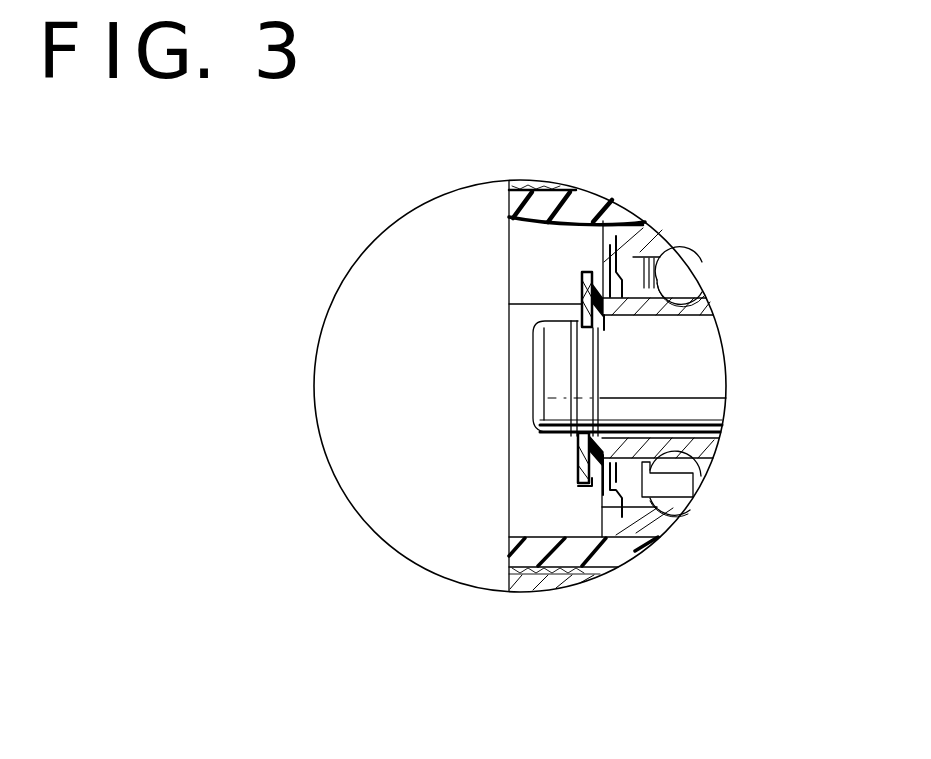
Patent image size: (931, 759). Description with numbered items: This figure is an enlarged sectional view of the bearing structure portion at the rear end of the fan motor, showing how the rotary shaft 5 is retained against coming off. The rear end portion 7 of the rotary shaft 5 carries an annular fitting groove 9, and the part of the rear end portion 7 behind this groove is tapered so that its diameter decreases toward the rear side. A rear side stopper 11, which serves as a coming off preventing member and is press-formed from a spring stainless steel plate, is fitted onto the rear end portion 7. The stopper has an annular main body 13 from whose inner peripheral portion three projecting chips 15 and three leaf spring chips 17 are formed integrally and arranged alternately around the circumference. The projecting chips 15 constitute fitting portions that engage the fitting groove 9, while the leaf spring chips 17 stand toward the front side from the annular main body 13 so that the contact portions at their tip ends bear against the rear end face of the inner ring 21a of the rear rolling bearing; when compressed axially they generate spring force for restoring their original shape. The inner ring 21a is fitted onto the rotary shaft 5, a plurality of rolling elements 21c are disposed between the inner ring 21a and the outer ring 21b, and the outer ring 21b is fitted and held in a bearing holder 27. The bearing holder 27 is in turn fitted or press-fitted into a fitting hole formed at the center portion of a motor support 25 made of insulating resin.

The rotary shaft 5 is at (690, 364).
The rear end portion 7 is at (544, 321).
The fitting groove 9 is at (577, 398).
The rear side stopper 11 is at (566, 281).
The annular main body 13 is at (596, 494).
The projecting chips 15 is at (580, 304).
The leaf spring chips 17 is at (606, 262).
The inner ring 21a is at (699, 312).
The outer ring 21b is at (644, 229).
The rolling elements 21c is at (678, 270).
The motor support 25 is at (557, 576).
The bearing holder 27 is at (617, 553).